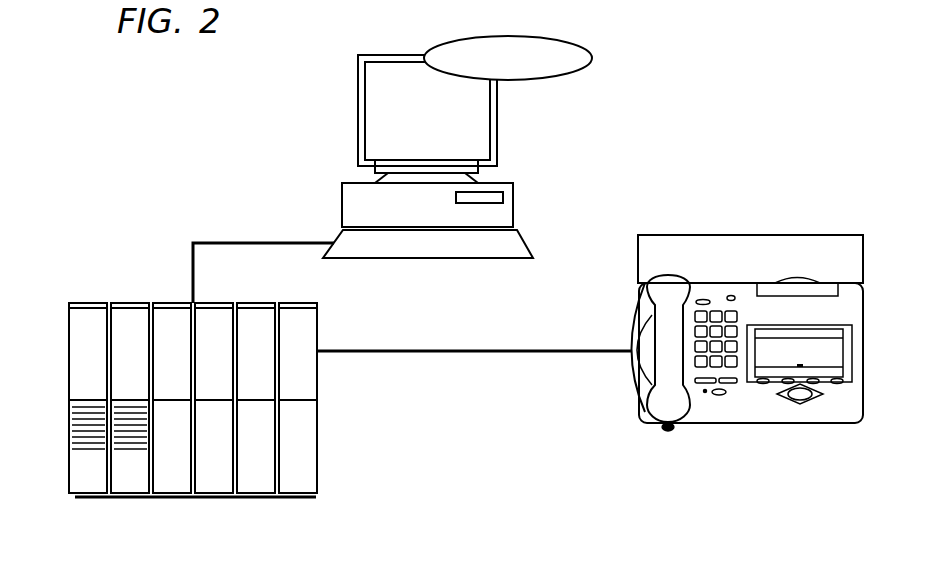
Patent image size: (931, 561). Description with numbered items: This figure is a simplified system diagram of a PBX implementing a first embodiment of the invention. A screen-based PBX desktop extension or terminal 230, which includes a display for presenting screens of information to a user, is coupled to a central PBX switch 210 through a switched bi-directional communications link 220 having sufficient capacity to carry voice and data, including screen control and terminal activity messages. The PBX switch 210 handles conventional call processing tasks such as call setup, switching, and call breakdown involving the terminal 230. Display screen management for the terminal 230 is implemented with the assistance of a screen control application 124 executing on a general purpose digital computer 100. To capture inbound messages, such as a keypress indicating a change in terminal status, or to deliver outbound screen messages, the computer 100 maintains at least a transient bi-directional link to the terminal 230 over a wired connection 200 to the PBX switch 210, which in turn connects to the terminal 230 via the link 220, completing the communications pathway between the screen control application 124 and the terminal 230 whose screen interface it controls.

The general purpose digital computer 100 is at (358, 90).
The screen control application 124 is at (545, 38).
The wired connection 200 is at (222, 243).
The central PBX switch 210 is at (92, 497).
The switched bi-directional communications link 220 is at (437, 353).
The screen-based PBX desktop extension or terminal 230 is at (782, 226).